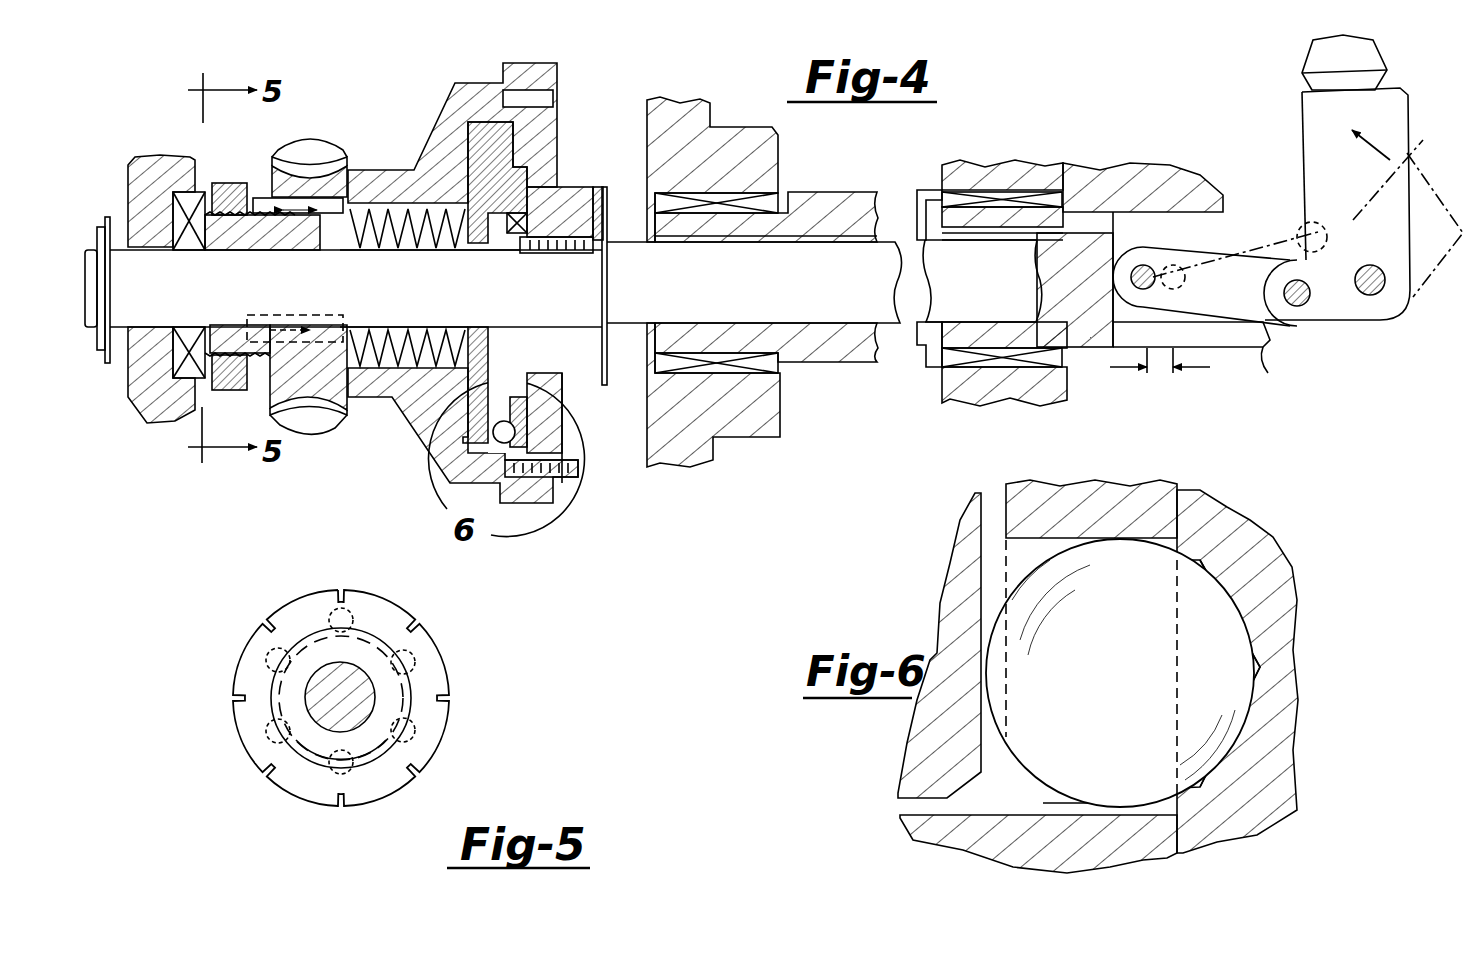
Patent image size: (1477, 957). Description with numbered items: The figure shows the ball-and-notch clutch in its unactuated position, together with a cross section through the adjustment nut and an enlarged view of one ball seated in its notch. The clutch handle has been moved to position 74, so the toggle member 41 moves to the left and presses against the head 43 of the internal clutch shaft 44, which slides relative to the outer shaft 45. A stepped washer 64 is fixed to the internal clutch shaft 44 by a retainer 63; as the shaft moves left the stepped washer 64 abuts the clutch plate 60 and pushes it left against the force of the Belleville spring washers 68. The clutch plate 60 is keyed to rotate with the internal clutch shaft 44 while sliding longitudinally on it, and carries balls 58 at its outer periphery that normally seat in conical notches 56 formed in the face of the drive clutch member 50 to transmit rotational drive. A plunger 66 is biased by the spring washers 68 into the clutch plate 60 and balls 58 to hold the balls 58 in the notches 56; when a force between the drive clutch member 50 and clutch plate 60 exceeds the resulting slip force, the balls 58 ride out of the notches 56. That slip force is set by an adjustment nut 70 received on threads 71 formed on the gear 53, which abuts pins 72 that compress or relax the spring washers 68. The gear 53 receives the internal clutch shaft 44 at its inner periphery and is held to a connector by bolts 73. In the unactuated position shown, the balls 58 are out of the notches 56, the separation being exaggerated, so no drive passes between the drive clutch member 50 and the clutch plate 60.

In FIG. 4, the toggle member 41 is at (1228, 287).
In FIG. 4, the head 43 is at (1113, 237).
In FIG. 4, the internal clutch shaft 44 is at (843, 270).
In FIG. 5, the internal clutch shaft 44 is at (343, 697).
In FIG. 4, the outer shaft 45 is at (797, 220).
In FIG. 4, the drive clutch member 50 is at (547, 83).
In FIG. 6, the drive clutch member 50 is at (1238, 542).
In FIG. 5, the gear 53 is at (280, 712).
In FIG. 4, the notches 56 is at (537, 425).
In FIG. 6, the notches 56 is at (1260, 662).
In FIG. 4, the balls 58 is at (497, 440).
In FIG. 6, the balls 58 is at (1070, 713).
In FIG. 4, the clutch plate 60 is at (513, 190).
In FIG. 6, the clutch plate 60 is at (1053, 497).
In FIG. 4, the retainer 63 is at (603, 232).
In FIG. 4, the stepped washer 64 is at (597, 200).
In FIG. 4, the plunger 66 is at (477, 423).
In FIG. 6, the plunger 66 is at (936, 727).
In FIG. 4, the Belleville spring washers 68 is at (382, 207).
In FIG. 4, the adjustment nut 70 is at (228, 193).
In FIG. 5, the adjustment nut 70 is at (298, 618).
In FIG. 4, the threads 71 is at (227, 353).
In FIG. 5, the threads 71 is at (377, 630).
In FIG. 5, the pins 72 is at (337, 613).
In FIG. 5, the bolts 73 is at (320, 770).
In FIG. 4, the position 74 is at (1383, 119).